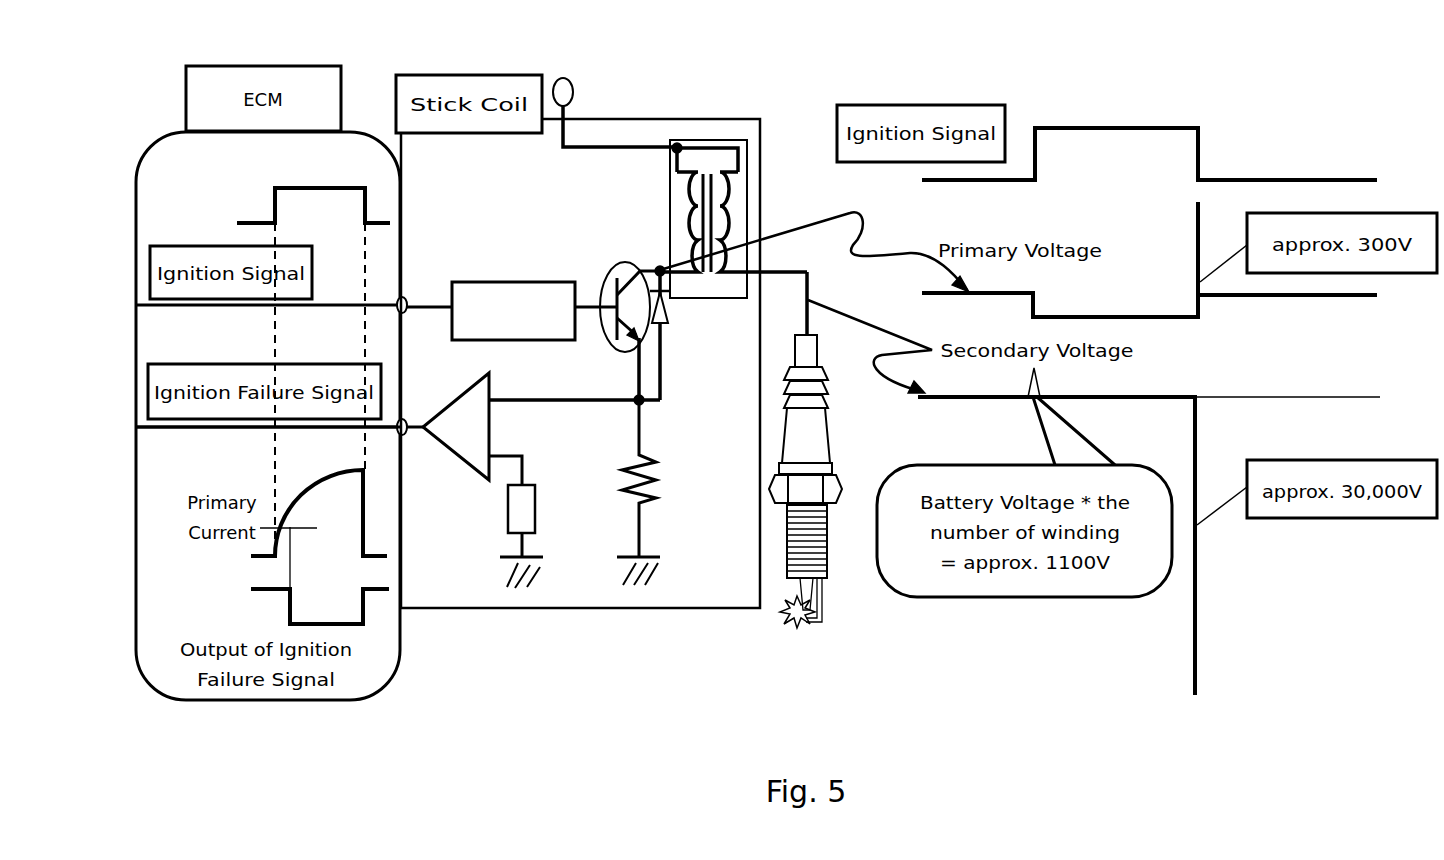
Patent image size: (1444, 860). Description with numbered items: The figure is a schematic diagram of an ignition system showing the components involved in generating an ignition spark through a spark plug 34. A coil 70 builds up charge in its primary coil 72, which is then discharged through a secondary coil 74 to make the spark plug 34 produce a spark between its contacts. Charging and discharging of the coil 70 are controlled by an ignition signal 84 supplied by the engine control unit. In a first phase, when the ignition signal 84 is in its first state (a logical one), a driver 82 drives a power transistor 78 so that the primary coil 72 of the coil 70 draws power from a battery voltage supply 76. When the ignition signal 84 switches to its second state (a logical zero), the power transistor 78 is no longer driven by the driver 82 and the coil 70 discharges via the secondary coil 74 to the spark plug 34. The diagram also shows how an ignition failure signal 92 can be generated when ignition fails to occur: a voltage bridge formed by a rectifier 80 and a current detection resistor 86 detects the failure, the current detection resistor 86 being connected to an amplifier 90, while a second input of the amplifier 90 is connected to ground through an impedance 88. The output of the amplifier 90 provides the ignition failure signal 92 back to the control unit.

The spark plug 34 is at (828, 453).
The coil 70 is at (748, 165).
The primary coil 72 is at (690, 207).
The secondary coil 74 is at (720, 217).
The battery voltage supply 76 is at (563, 78).
The power transistor 78 is at (633, 263).
The rectifier 80 is at (668, 305).
The driver 82 is at (517, 282).
The ignition signal 84 is at (273, 207).
The current detection resistor 86 is at (660, 477).
The impedance 88 is at (535, 482).
The amplifier 90 is at (460, 460).
The ignition failure signal 92 is at (188, 431).